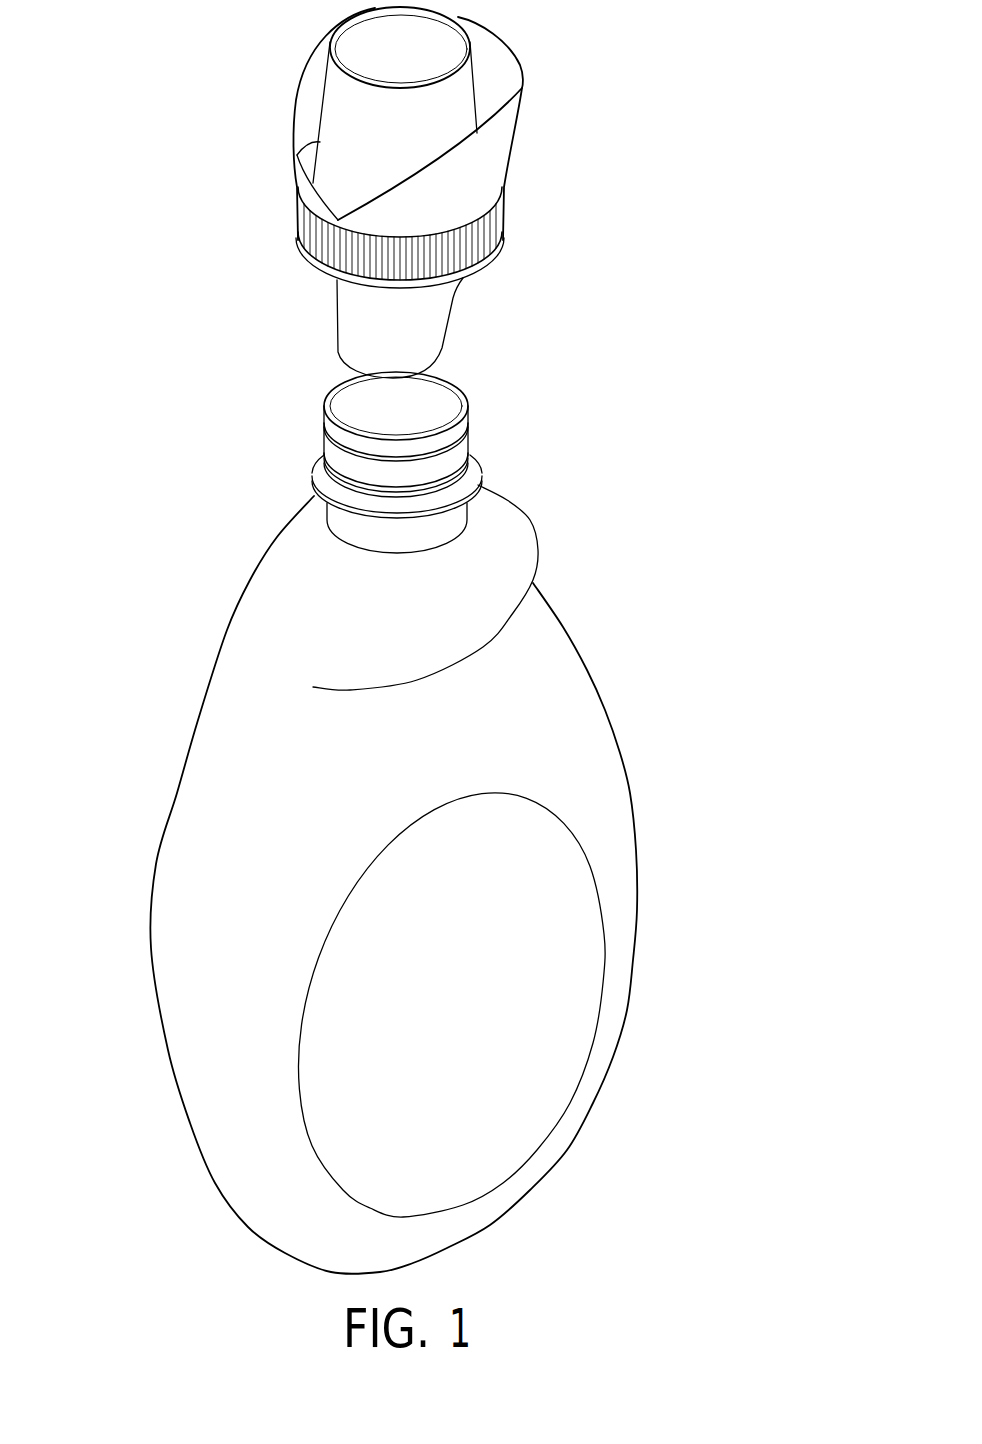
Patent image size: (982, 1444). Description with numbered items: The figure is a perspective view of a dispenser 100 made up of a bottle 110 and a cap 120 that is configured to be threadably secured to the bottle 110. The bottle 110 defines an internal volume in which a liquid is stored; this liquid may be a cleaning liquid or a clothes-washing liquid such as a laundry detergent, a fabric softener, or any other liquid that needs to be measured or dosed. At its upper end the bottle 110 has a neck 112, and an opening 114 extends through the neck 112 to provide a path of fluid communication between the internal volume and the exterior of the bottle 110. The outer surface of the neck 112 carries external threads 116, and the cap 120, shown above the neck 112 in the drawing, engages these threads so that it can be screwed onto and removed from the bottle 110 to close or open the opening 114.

The dispenser 100 is at (398, 640).
The bottle 110 is at (639, 650).
The neck 112 is at (447, 527).
The opening 114 is at (378, 397).
The external threads 116 is at (470, 427).
The cap 120 is at (564, 227).